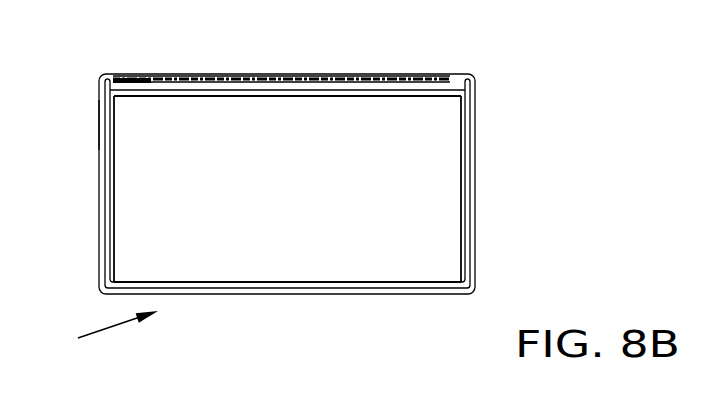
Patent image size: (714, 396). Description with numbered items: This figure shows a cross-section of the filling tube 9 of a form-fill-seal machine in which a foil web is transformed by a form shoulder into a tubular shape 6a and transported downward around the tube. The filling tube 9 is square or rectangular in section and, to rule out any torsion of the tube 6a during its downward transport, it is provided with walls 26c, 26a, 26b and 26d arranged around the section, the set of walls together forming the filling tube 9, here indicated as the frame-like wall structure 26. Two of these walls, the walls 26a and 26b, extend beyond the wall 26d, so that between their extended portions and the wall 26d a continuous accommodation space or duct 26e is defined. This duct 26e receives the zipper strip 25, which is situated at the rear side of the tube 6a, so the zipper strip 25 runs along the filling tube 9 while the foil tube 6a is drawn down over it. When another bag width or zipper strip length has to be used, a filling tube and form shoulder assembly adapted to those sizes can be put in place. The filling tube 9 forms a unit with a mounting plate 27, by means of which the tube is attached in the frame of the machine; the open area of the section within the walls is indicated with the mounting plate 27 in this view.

The filling tube 9 is at (105, 335).
The tubular shape 6a is at (100, 126).
The zipper strip 25 is at (368, 74).
The walls of the filling tube 26 is at (100, 246).
The wall 26a is at (112, 212).
The wall 26b is at (469, 187).
The wall 26c is at (353, 283).
The wall 26d is at (264, 97).
The accommodation space or duct 26e is at (118, 84).
The mounting plate 27 is at (308, 190).